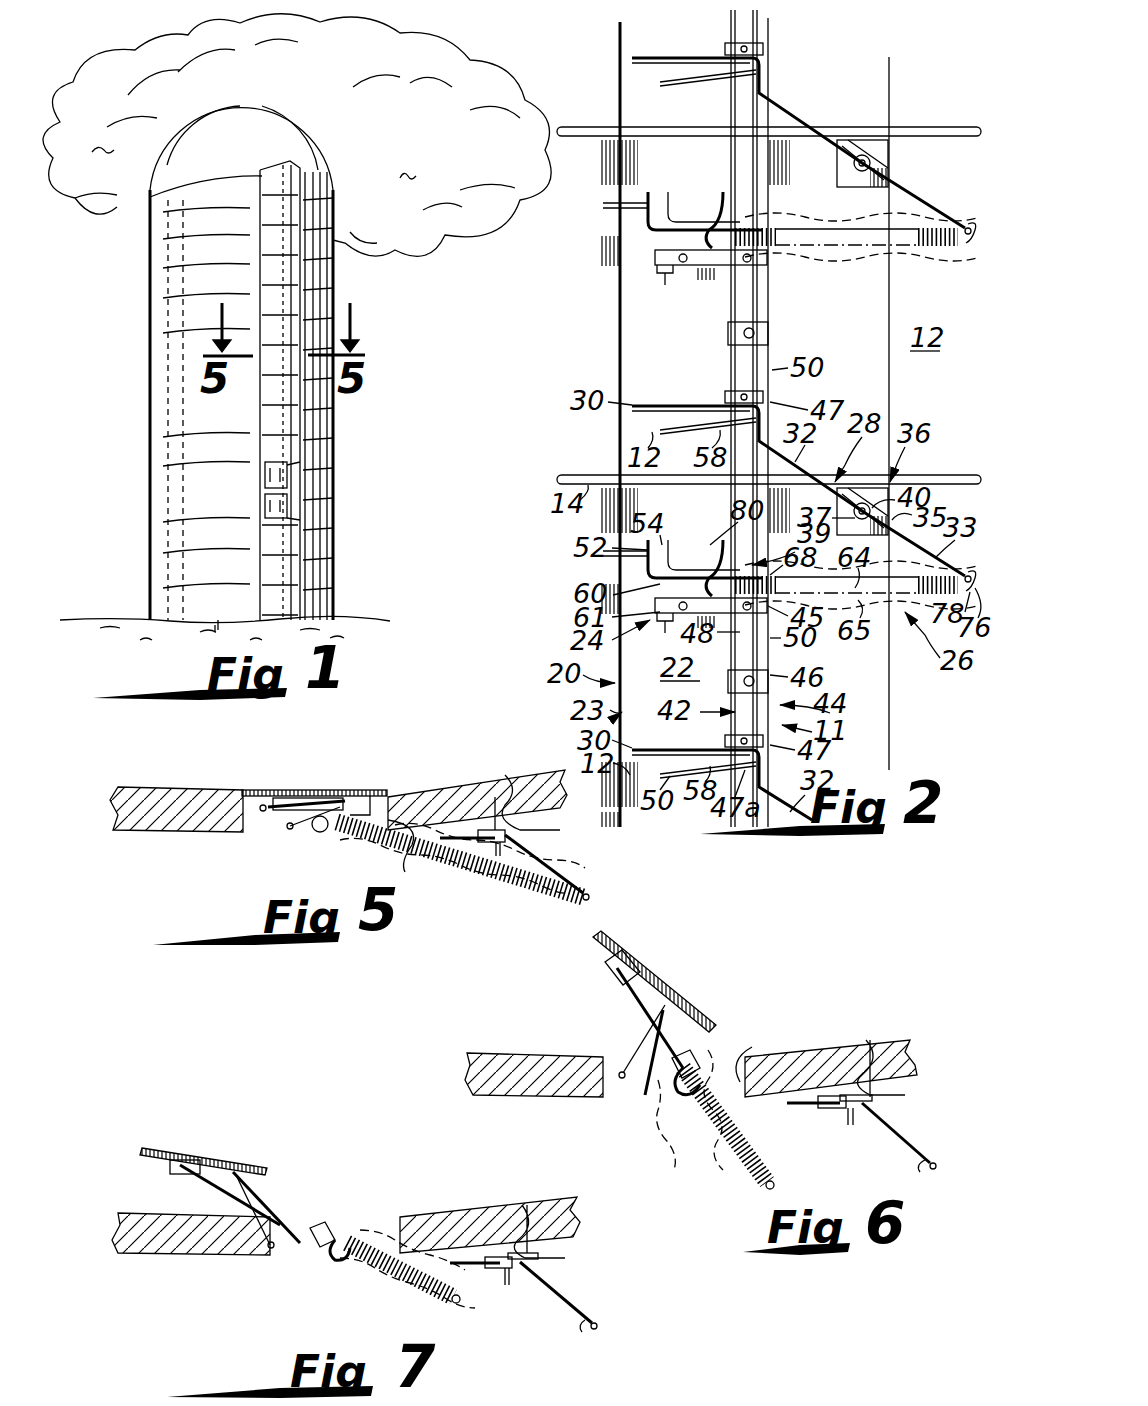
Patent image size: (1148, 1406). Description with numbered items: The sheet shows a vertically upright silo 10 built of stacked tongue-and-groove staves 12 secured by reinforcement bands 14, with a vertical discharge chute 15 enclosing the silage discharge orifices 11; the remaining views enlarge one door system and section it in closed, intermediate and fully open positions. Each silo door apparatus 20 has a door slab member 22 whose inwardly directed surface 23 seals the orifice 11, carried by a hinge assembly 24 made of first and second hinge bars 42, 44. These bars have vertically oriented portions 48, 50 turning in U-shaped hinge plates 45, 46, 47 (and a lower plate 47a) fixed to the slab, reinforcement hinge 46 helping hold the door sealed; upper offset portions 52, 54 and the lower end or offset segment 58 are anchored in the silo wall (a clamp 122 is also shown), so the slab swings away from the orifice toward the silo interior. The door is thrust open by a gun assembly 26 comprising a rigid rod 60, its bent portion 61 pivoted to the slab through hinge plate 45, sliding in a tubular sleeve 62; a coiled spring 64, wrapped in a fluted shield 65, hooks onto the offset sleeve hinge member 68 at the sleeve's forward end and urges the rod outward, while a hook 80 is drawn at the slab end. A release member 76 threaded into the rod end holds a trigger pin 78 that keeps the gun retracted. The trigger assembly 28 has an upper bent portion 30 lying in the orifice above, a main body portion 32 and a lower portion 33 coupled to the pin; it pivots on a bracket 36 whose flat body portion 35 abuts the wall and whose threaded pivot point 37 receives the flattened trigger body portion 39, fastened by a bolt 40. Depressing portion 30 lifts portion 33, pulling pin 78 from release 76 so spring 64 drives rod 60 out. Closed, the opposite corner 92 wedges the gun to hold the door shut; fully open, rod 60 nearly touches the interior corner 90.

In FIG. 1, the silo 10 is at (130, 275).
In FIG. 1, the silage discharge orifice 11 is at (265, 510).
In FIG. 2, the silage discharge orifice 11 is at (785, 383).
In FIG. 5, the silage discharge orifice 11 is at (395, 800).
In FIG. 6, the silage discharge orifice 11 is at (615, 1060).
In FIG. 7, the silage discharge orifice 11 is at (385, 1225).
In FIG. 1, the stacked nodules (silo staves) 12 is at (150, 490).
In FIG. 2, the stacked nodules (silo staves) 12 is at (630, 88).
In FIG. 5, the stacked nodules (silo staves) 12 is at (175, 835).
In FIG. 6, the stacked nodules (silo staves) 12 is at (518, 1098).
In FIG. 7, the stacked nodules (silo staves) 12 is at (166, 1253).
In FIG. 1, the reinforcement band 14 is at (320, 455).
In FIG. 2, the reinforcement band 14 is at (590, 125).
In FIG. 1, the vertical discharge chute 15 is at (292, 165).
In FIG. 2, the silo door apparatus 20 is at (615, 322).
In FIG. 2, the door slab member 22 is at (700, 42).
In FIG. 5, the door slab member 22 is at (393, 782).
In FIG. 6, the door slab member 22 is at (700, 1022).
In FIG. 7, the door slab member 22 is at (265, 1170).
In FIG. 2, the door slab surface 23 is at (620, 378).
In FIG. 5, the door slab surface 23 is at (312, 790).
In FIG. 6, the door slab surface 23 is at (655, 965).
In FIG. 7, the door slab surface 23 is at (152, 1145).
In FIG. 2, the hinge assembly 24 is at (760, 35).
In FIG. 5, the hinge assembly 24 is at (245, 815).
In FIG. 6, the hinge assembly 24 is at (628, 1000).
In FIG. 7, the hinge assembly 24 is at (265, 1190).
In FIG. 2, the gun assembly 26 is at (905, 260).
In FIG. 5, the gun assembly 26 is at (385, 865).
In FIG. 6, the gun assembly 26 is at (775, 1158).
In FIG. 7, the gun assembly 26 is at (330, 1300).
In FIG. 2, the trigger assembly 28 is at (835, 135).
In FIG. 5, the trigger assembly 28 is at (565, 878).
In FIG. 6, the trigger assembly 28 is at (938, 1168).
In FIG. 7, the trigger assembly 28 is at (598, 1320).
In FIG. 2, the upper bent portion 30 is at (632, 57).
In FIG. 2, the main body portion 32 is at (815, 108).
In FIG. 5, the main body portion 32 is at (472, 843).
In FIG. 6, the main body portion 32 is at (797, 1108).
In FIG. 7, the main body portion 32 is at (495, 1270).
In FIG. 2, the lower portion 33 is at (935, 212).
In FIG. 5, the lower portion 33 is at (550, 870).
In FIG. 6, the lower portion 33 is at (915, 1145).
In FIG. 7, the lower portion 33 is at (565, 1305).
In FIG. 2, the flat body portion 35 is at (890, 176).
In FIG. 6, the flat body portion 35 is at (875, 1097).
In FIG. 7, the flat body portion 35 is at (540, 1256).
In FIG. 2, the bracket 36 is at (890, 135).
In FIG. 5, the bracket 36 is at (495, 805).
In FIG. 6, the bracket 36 is at (852, 1075).
In FIG. 7, the bracket 36 is at (502, 1235).
In FIG. 2, the threaded pivot point 37 is at (855, 172).
In FIG. 6, the threaded pivot point 37 is at (852, 1126).
In FIG. 7, the threaded pivot point 37 is at (507, 1287).
In FIG. 2, the flattened trigger body portion 39 is at (848, 160).
In FIG. 5, the flattened trigger body portion 39 is at (520, 828).
In FIG. 6, the flattened trigger body portion 39 is at (905, 1060).
In FIG. 7, the flattened trigger body portion 39 is at (530, 1225).
In FIG. 2, the bolt 40 is at (872, 160).
In FIG. 6, the bolt 40 is at (835, 1110).
In FIG. 7, the bolt 40 is at (512, 1270).
In FIG. 2, the first hinge bar 42 is at (740, 295).
In FIG. 2, the second hinge bar 44 is at (768, 312).
In FIG. 2, the hinge plate 45 is at (657, 258).
In FIG. 5, the hinge plate 45 is at (348, 797).
In FIG. 6, the hinge plate 45 is at (612, 968).
In FIG. 7, the hinge plate 45 is at (170, 1165).
In FIG. 2, the reinforcement hinge 46 is at (768, 333).
In FIG. 2, the hinge plate (bracket) 47 is at (768, 52).
In FIG. 2, the clamp 47a is at (660, 430).
In FIG. 2, the vertically oriented portion 48 is at (740, 365).
In FIG. 2, the vertically oriented portion 50 is at (668, 78).
In FIG. 2, the upper offset portion 52 is at (648, 206).
In FIG. 5, the upper offset portion 52 is at (288, 828).
In FIG. 6, the upper offset portion 52 is at (622, 1080).
In FIG. 7, the upper offset portion 52 is at (270, 1250).
In FIG. 2, the upper offset portion 54 is at (662, 195).
In FIG. 5, the upper offset portion 54 is at (310, 820).
In FIG. 6, the upper offset portion 54 is at (648, 1098).
In FIG. 7, the upper offset portion 54 is at (300, 1250).
In FIG. 2, the lower end / offset segment 58 is at (712, 80).
In FIG. 2, the first elongated member (gun rod) 60 is at (660, 236).
In FIG. 5, the first elongated member (gun rod) 60 is at (295, 805).
In FIG. 6, the first elongated member (gun rod) 60 is at (625, 983).
In FIG. 7, the first elongated member (gun rod) 60 is at (205, 1178).
In FIG. 2, the bent portion 61 is at (665, 272).
In FIG. 6, the second elongated member (tubular sleeve) 62 is at (690, 1055).
In FIG. 7, the second elongated member (tubular sleeve) 62 is at (320, 1225).
In FIG. 2, the coiled spring member 64 is at (843, 240).
In FIG. 5, the coiled spring member 64 is at (522, 890).
In FIG. 6, the coiled spring member 64 is at (740, 1168).
In FIG. 7, the coiled spring member 64 is at (375, 1280).
In FIG. 2, the fluted exterior shield 65 is at (860, 258).
In FIG. 5, the fluted exterior shield 65 is at (468, 888).
In FIG. 6, the fluted exterior shield 65 is at (715, 1135).
In FIG. 7, the fluted exterior shield 65 is at (410, 1292).
In FIG. 2, the offset sleeve hinge member 68 is at (740, 215).
In FIG. 2, the release member 76 is at (975, 238).
In FIG. 5, the release member 76 is at (590, 897).
In FIG. 6, the release member 76 is at (768, 1190).
In FIG. 7, the release member 76 is at (455, 1304).
In FIG. 2, the trigger pin 78 is at (970, 245).
In FIG. 6, the trigger pin 78 is at (928, 1170).
In FIG. 7, the trigger pin 78 is at (585, 1328).
In FIG. 2, the hook 80 is at (708, 195).
In FIG. 5, the hook 80 is at (325, 832).
In FIG. 6, the hook 80 is at (700, 1095).
In FIG. 7, the hook 80 is at (345, 1262).
In FIG. 5, the interior corner 90 is at (262, 806).
In FIG. 6, the interior corner 90 is at (618, 1070).
In FIG. 5, the opposite corner 92 is at (405, 850).
In FIG. 6, the opposite corner 92 is at (740, 1050).
In FIG. 2, the clamp 122 is at (730, 400).